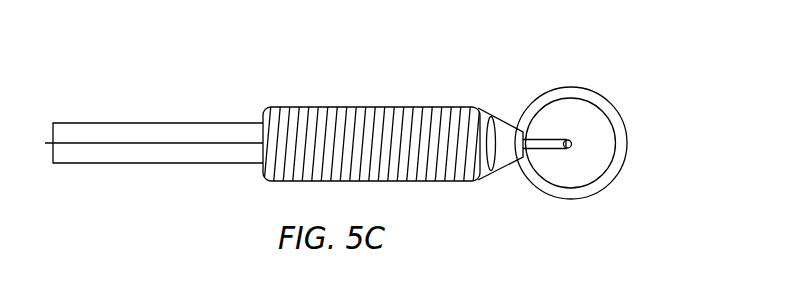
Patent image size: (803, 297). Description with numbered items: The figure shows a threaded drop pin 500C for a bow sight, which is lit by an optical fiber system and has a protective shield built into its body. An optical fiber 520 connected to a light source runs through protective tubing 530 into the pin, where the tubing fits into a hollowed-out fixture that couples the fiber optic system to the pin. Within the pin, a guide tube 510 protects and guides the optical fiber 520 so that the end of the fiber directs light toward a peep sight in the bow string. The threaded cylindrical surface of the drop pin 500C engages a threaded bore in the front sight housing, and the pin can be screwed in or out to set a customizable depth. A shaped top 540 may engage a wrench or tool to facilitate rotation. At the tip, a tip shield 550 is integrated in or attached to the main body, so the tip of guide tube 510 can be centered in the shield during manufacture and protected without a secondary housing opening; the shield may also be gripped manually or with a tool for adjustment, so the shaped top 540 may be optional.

The threaded drop pin 500C is at (358, 106).
The guide tube 510 is at (547, 146).
The optical fiber 520 is at (123, 144).
The protective tubing 530 is at (152, 125).
The shaped top 540 is at (503, 113).
The tip shield 550 is at (582, 88).